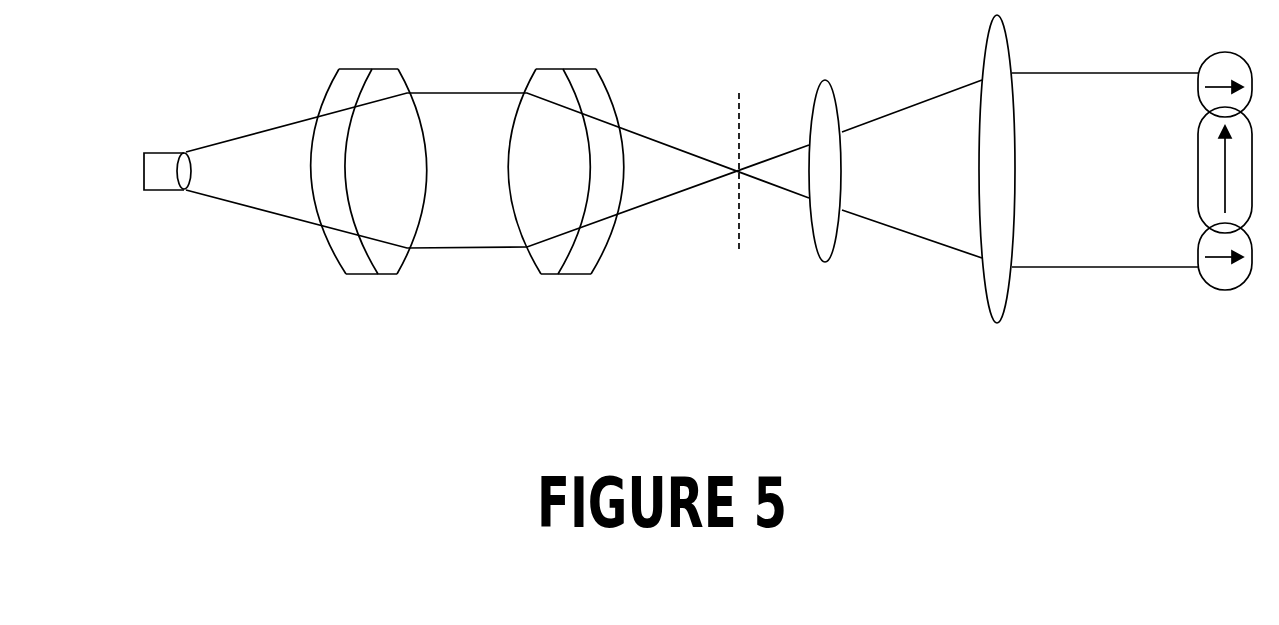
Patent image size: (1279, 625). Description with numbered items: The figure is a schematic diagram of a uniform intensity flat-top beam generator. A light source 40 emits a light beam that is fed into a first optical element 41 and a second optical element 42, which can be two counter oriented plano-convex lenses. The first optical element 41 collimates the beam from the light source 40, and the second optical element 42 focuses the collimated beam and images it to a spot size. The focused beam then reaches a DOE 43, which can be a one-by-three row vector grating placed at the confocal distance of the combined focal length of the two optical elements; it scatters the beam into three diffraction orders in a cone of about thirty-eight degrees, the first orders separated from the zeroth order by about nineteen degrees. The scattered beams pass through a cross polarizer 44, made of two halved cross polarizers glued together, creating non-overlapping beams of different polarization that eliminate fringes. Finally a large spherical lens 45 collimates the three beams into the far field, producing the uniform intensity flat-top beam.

The light source 40 is at (170, 195).
The first optical element 41 is at (402, 275).
The second optical element 42 is at (533, 272).
The DOE 43 is at (739, 249).
The cross polarizer 44 is at (825, 242).
The large spherical lens 45 is at (997, 302).